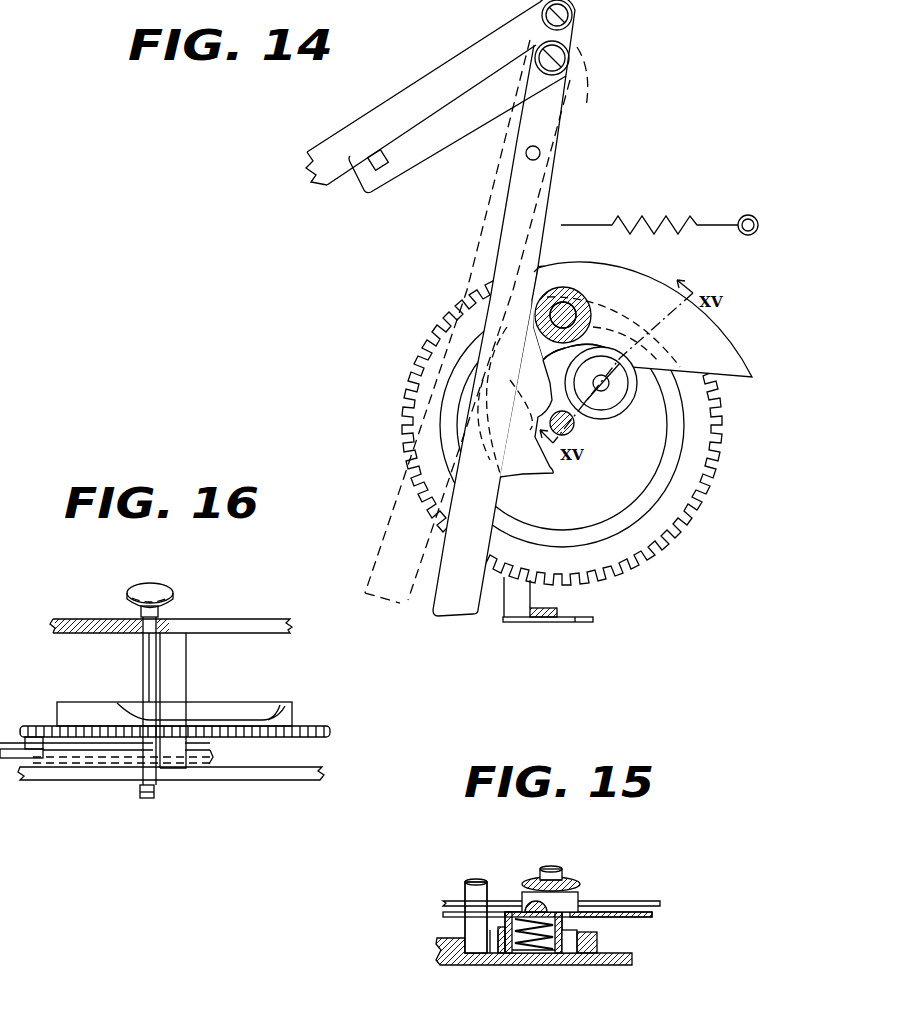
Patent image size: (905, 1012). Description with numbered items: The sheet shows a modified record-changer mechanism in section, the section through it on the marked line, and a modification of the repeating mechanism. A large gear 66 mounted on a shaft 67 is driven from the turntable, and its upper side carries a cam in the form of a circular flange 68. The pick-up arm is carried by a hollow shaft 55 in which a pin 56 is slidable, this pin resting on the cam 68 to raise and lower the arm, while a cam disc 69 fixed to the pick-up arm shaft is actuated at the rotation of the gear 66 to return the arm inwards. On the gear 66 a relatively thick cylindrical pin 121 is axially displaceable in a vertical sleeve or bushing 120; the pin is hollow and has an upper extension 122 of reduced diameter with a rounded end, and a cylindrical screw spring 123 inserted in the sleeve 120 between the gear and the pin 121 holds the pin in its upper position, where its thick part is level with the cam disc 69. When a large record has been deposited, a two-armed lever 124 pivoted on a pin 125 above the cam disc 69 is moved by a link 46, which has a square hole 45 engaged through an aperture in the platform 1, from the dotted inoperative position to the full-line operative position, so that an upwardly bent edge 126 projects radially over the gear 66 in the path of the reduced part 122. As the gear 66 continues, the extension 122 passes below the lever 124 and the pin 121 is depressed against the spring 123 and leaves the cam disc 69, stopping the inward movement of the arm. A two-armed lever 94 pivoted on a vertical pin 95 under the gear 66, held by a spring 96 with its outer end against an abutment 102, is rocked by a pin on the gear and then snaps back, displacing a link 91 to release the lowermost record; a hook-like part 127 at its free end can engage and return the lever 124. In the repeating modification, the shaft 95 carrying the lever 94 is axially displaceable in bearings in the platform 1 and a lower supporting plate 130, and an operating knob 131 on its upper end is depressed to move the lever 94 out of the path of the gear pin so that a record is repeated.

In FIG. 16, the platform 1 is at (222, 628).
In FIG. 14, the square hole 45 is at (370, 150).
In FIG. 14, the link 46 is at (462, 103).
In FIG. 14, the hollow shaft 55 is at (590, 305).
In FIG. 15, the hollow shaft 55 is at (575, 888).
In FIG. 14, the pin 56 is at (578, 298).
In FIG. 15, the pin 56 is at (553, 866).
In FIG. 16, the large gear 66 is at (300, 729).
In FIG. 15, the large gear 66 is at (630, 963).
In FIG. 16, the shaft 67 is at (182, 671).
In FIG. 15, the shaft 67 is at (476, 897).
In FIG. 15, the cam 68 is at (597, 942).
In FIG. 14, the cam disc 69 is at (722, 338).
In FIG. 15, the cam disc 69 is at (600, 916).
In FIG. 14, the link 91 is at (323, 153).
In FIG. 14, the two-armed lever 94 is at (520, 590).
In FIG. 16, the two-armed lever 94 is at (213, 749).
In FIG. 16, the vertical pin 95 is at (145, 673).
In FIG. 14, the spring 96 is at (622, 220).
In FIG. 14, the abutment 102 is at (557, 617).
In FIG. 14, the sleeve or bushing 120 is at (601, 383).
In FIG. 15, the sleeve or bushing 120 is at (493, 940).
In FIG. 14, the cylindrical pin 121 is at (637, 393).
In FIG. 15, the cylindrical pin 121 is at (578, 912).
In FIG. 14, the upper extension 122 is at (603, 390).
In FIG. 15, the upper extension 122 is at (547, 872).
In FIG. 15, the screw spring 123 is at (540, 952).
In FIG. 14, the two-armed lever 124 is at (458, 608).
In FIG. 15, the two-armed lever 124 is at (465, 897).
In FIG. 14, the pin 125 is at (540, 152).
In FIG. 14, the edge 126 is at (543, 347).
In FIG. 15, the edge 126 is at (530, 908).
In FIG. 14, the hook-like part 127 is at (530, 620).
In FIG. 16, the lower supporting plate 130 is at (272, 778).
In FIG. 16, the operating knob 131 is at (142, 582).